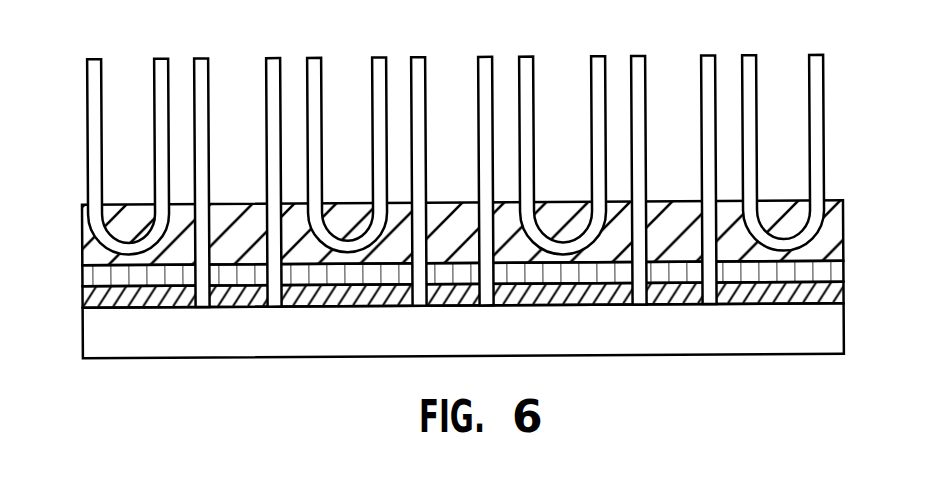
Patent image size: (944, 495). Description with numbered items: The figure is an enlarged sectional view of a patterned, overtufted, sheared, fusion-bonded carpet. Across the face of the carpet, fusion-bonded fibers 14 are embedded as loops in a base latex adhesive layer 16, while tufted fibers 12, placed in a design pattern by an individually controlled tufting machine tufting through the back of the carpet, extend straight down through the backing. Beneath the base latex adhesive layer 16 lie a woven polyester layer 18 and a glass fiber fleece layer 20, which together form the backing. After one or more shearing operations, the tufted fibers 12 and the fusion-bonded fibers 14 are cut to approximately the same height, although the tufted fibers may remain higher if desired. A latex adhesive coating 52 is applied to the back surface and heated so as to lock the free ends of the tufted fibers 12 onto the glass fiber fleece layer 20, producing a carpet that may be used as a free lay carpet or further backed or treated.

The tufted fibers 12 is at (274, 54).
The fusion-bonded fibers 14 is at (162, 54).
The base latex adhesive layer 16 is at (837, 238).
The woven polyester layer 18 is at (832, 272).
The glass fiber fleece layer 20 is at (832, 291).
The latex adhesive coating 52 is at (843, 316).